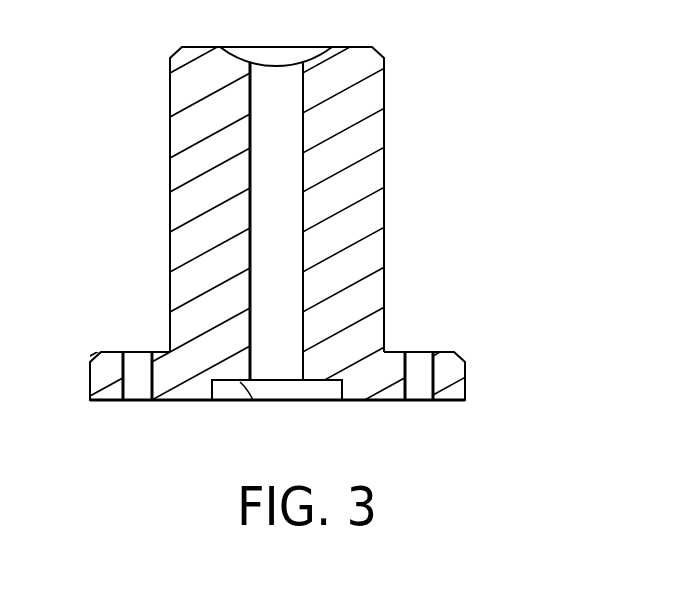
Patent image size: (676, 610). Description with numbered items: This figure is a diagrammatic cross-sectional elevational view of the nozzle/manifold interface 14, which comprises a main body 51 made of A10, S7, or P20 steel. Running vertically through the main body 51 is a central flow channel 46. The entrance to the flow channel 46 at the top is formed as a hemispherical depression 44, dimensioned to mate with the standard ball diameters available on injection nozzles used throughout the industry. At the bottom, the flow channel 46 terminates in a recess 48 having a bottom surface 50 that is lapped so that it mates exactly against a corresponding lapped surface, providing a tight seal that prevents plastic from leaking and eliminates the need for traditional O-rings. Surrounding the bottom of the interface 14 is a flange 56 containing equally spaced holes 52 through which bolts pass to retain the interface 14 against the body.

The nozzle/manifold interface 14 is at (394, 204).
The hemispherical depression 44 is at (313, 58).
The central flow channel 46 is at (303, 97).
The recess 48 is at (338, 388).
The bottom surface 50 is at (253, 400).
The main body 51 is at (170, 210).
The holes 52 is at (128, 363).
The flange 56 is at (100, 364).